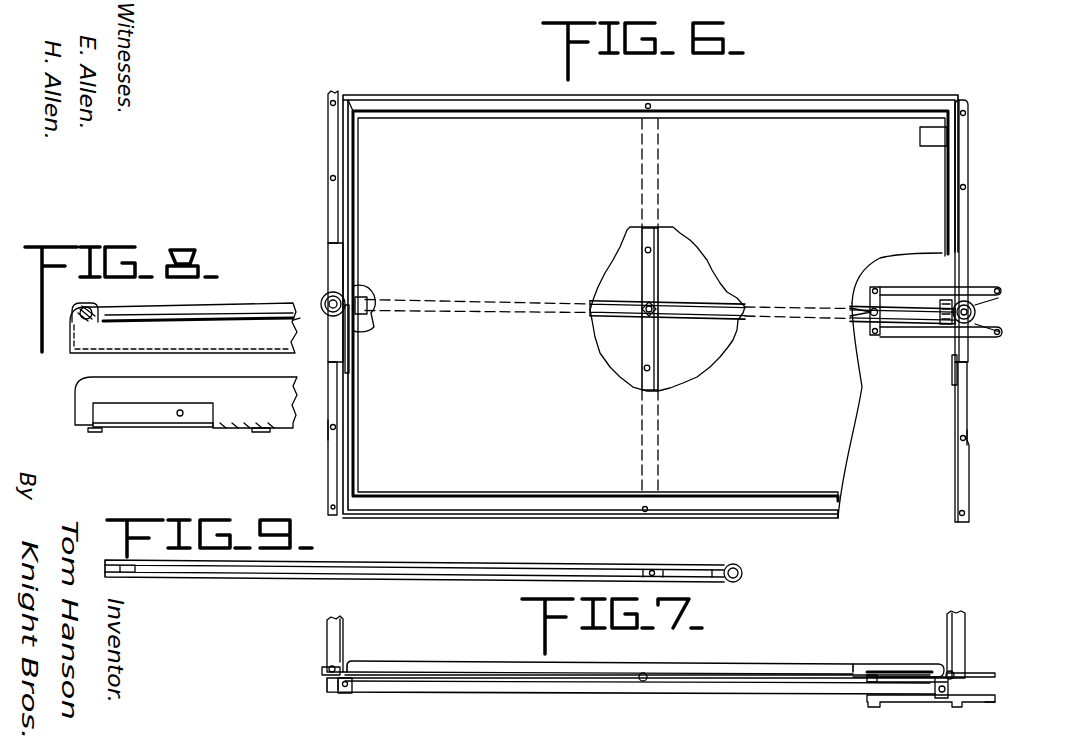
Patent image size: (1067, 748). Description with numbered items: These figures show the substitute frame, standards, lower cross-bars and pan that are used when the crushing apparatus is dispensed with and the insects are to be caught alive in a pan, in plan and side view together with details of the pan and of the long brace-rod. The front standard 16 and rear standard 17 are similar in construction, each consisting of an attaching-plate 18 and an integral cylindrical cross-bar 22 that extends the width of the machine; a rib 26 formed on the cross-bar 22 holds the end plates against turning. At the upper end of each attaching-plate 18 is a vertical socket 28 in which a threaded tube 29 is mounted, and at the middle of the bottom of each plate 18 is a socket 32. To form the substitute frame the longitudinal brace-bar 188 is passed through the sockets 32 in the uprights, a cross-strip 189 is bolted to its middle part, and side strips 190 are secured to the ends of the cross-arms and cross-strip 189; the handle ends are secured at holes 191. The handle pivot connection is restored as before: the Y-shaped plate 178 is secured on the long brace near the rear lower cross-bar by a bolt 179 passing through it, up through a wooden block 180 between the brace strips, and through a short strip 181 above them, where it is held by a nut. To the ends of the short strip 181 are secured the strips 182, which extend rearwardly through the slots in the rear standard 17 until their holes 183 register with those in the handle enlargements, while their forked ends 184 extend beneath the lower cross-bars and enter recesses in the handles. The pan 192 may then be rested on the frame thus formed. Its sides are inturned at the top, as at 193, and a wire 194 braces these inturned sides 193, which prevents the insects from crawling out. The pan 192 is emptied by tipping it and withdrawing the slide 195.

In FIG. 6, the front standard 16 is at (320, 183).
In FIG. 7, the front standard 16 is at (344, 642).
In FIG. 6, the rear standard 17 is at (974, 239).
In FIG. 7, the rear standard 17 is at (964, 636).
In FIG. 6, the attaching-plate 18 is at (353, 362).
In FIG. 6, the cylindrical cross-bar 22 is at (329, 479).
In FIG. 7, the cylindrical cross-bar 22 is at (329, 668).
In FIG. 6, the rib 26 is at (329, 454).
In FIG. 6, the vertical socket 28 is at (321, 301).
In FIG. 6, the threaded tube 29 is at (330, 312).
In FIG. 8, the threaded tube 29 is at (308, 330).
In FIG. 6, the socket 32 is at (356, 298).
In FIG. 7, the socket 32 is at (350, 694).
In FIG. 7, the Y-shaped plate 178 is at (902, 703).
In FIG. 6, the bolt 179 is at (868, 322).
In FIG. 7, the bolt 179 is at (870, 672).
In FIG. 6, the wooden block 180 is at (851, 303).
In FIG. 6, the short strip 181 is at (878, 337).
In FIG. 7, the short strip 181 is at (866, 683).
In FIG. 6, the strips 182 is at (973, 287).
In FIG. 7, the strips 182 is at (917, 675).
In FIG. 6, the holes 183 is at (1003, 288).
In FIG. 6, the forked ends 184 is at (998, 333).
In FIG. 7, the forked ends 184 is at (988, 702).
In FIG. 6, the longitudinal brace-bar 188 is at (606, 318).
In FIG. 9, the longitudinal brace-bar 188 is at (446, 568).
In FIG. 7, the longitudinal brace-bar 188 is at (582, 694).
In FIG. 6, the cross-strip 189 is at (657, 342).
In FIG. 7, the cross-strip 189 is at (648, 681).
In FIG. 6, the side strips 190 is at (759, 107).
In FIG. 7, the side strips 190 is at (547, 678).
In FIG. 6, the holes 191 is at (643, 250).
In FIG. 6, the pan 192 is at (668, 410).
In FIG. 8, the pan 192 is at (183, 367).
In FIG. 7, the pan 192 is at (697, 665).
In FIG. 6, the inturned sides 193 is at (781, 123).
In FIG. 8, the inturned sides 193 is at (180, 312).
In FIG. 7, the inturned sides 193 is at (896, 666).
In FIG. 8, the wire 194 is at (98, 310).
In FIG. 6, the slide 195 is at (947, 136).
In FIG. 8, the slide 195 is at (153, 415).